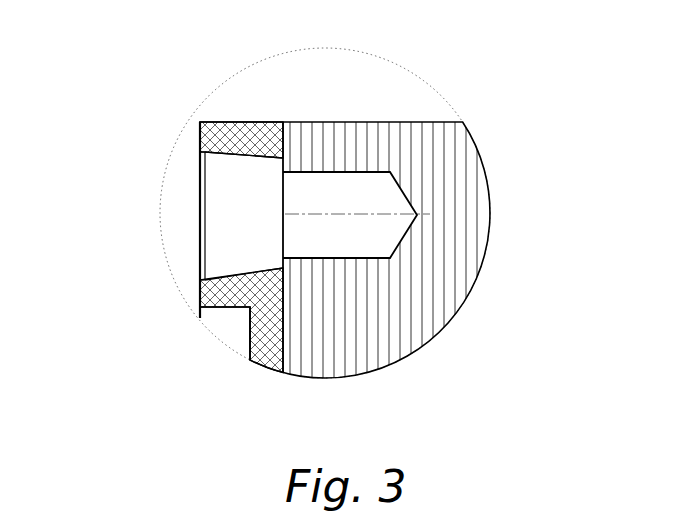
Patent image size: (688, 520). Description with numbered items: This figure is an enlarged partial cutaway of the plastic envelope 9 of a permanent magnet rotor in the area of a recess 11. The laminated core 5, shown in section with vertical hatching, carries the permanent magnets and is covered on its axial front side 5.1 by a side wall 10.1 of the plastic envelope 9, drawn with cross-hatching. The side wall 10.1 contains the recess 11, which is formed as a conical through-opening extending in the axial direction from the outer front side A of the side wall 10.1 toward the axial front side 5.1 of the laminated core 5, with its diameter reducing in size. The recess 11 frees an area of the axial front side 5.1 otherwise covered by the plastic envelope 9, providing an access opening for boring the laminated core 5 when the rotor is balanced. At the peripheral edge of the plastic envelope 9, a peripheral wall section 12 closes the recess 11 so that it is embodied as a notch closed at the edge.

The laminated core 5 is at (455, 170).
The axial front side 5.1 is at (283, 350).
The plastic envelope 9 is at (262, 320).
The side wall 10.1 is at (216, 290).
The recess 11 is at (258, 237).
The peripheral wall section 12 is at (247, 138).
The outer front side A is at (195, 178).